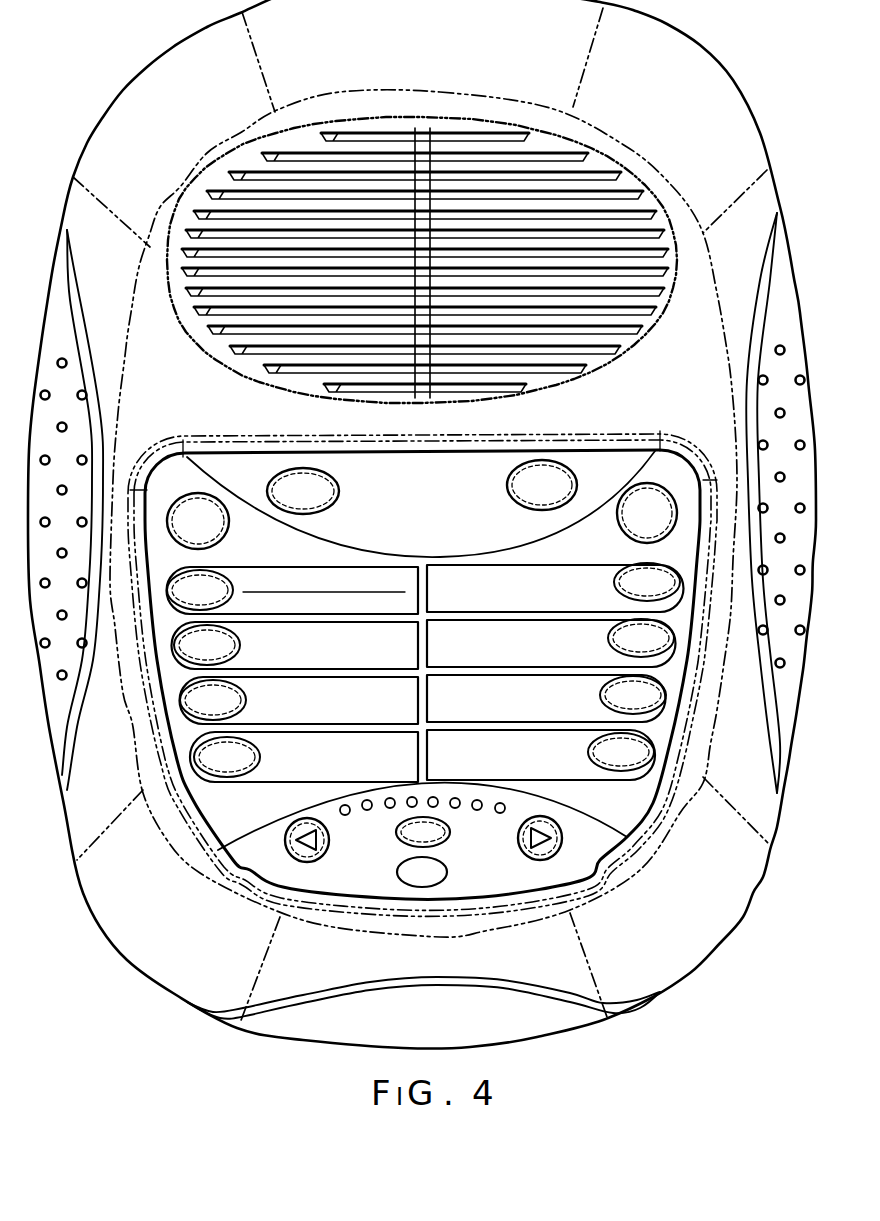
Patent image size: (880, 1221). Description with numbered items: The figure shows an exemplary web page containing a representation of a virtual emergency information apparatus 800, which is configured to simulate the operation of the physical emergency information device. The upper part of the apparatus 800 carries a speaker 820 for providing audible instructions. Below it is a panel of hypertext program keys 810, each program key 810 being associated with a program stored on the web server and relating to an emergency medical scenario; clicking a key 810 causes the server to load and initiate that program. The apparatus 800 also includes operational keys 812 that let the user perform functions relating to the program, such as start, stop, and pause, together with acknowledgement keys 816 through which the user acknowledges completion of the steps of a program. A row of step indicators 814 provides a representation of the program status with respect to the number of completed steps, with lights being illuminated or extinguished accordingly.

The virtual emergency information apparatus 800 is at (134, 991).
The program keys 810 is at (194, 760).
The operational keys 812 is at (342, 486).
The step indicators 814 is at (390, 809).
The acknowledgement keys 816 is at (180, 503).
The speaker 820 is at (583, 190).